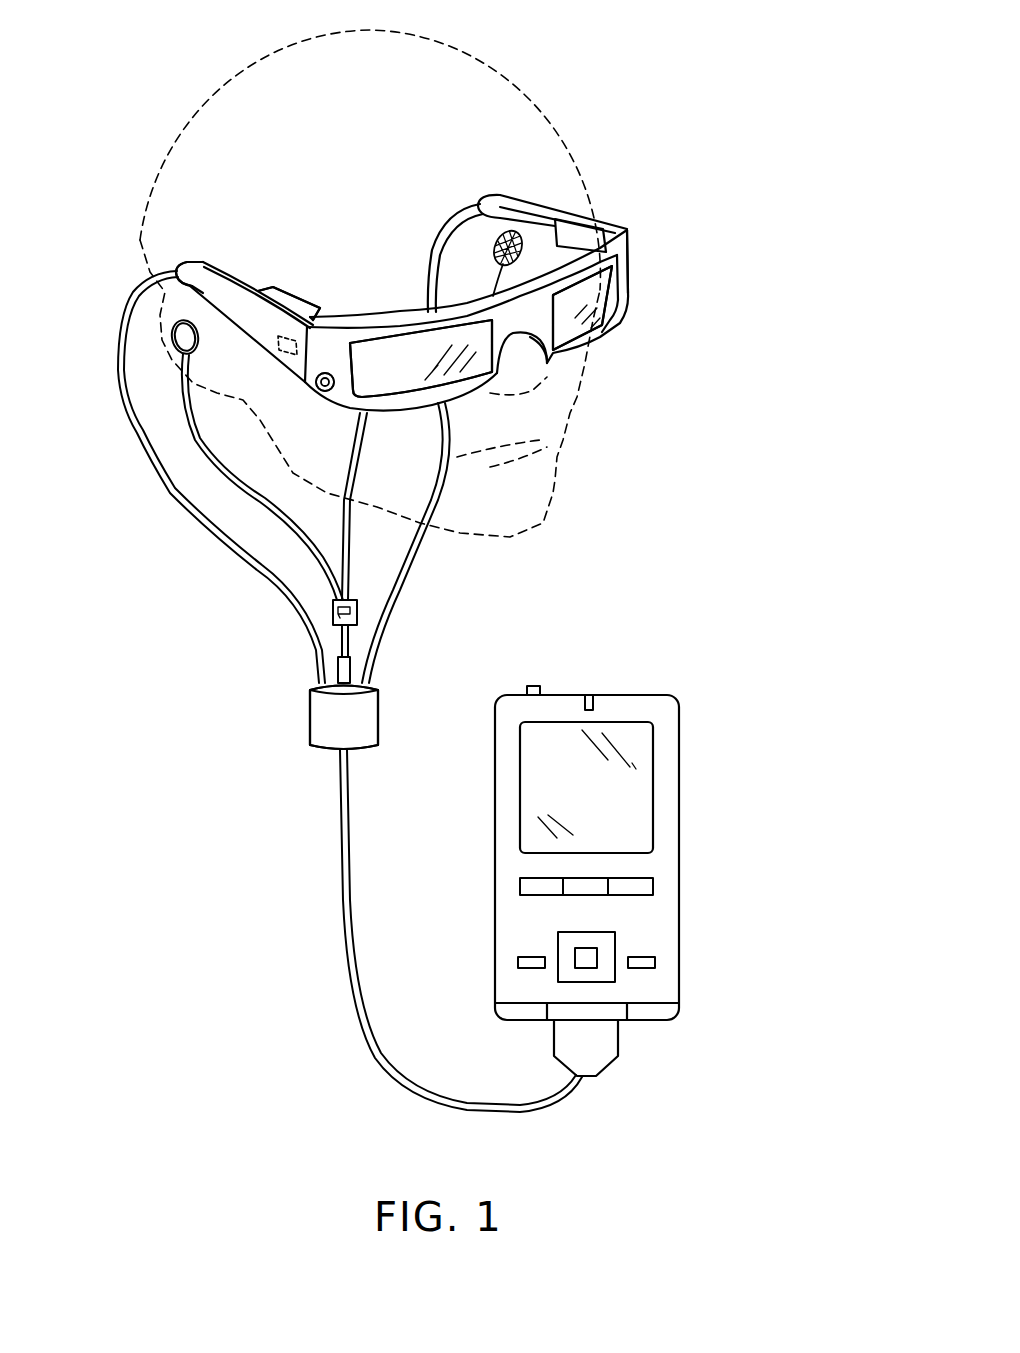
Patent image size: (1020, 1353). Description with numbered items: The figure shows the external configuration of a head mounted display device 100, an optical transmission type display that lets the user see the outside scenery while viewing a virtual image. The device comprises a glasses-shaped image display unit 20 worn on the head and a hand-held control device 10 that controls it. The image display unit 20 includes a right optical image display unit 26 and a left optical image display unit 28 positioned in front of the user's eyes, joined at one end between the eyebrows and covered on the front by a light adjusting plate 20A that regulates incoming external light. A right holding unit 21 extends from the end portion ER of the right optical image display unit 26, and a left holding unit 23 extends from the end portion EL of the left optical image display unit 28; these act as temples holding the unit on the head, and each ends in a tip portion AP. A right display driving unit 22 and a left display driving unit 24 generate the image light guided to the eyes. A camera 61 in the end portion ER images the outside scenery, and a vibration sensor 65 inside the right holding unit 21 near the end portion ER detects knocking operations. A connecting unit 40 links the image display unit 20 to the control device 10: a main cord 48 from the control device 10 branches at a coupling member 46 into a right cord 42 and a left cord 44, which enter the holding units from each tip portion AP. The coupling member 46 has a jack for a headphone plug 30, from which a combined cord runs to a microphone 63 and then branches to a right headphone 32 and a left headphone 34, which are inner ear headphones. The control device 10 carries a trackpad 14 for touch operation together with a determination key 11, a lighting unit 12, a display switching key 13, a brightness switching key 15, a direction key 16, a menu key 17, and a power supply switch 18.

The head mounted display device 100 is at (578, 110).
The control device 10 is at (653, 632).
The determination key 11 is at (592, 955).
The lighting unit 12 is at (589, 695).
The display switching key 13 is at (653, 962).
The trackpad 14 is at (540, 773).
The brightness switching key 15 is at (513, 963).
The direction key 16 is at (565, 943).
The menu key 17 is at (518, 887).
The power supply switch 18 is at (533, 686).
The image display unit 20 is at (637, 221).
The light adjusting plate 20A is at (565, 332).
The right holding unit 21 is at (199, 251).
The right display driving unit 22 is at (294, 300).
The left holding unit 23 is at (552, 197).
The left display driving unit 24 is at (575, 224).
The right optical image display unit 26 is at (403, 392).
The left optical image display unit 28 is at (608, 310).
The headphone plug 30 is at (350, 667).
The right headphone 32 is at (183, 338).
The left headphone 34 is at (490, 243).
The connecting unit 40 is at (404, 682).
The right cord 42 is at (210, 530).
The left cord 44 is at (410, 557).
The coupling member 46 is at (367, 713).
The main cord 48 is at (347, 913).
The camera 61 is at (318, 386).
The microphone 63 is at (337, 617).
The vibration sensor 65 is at (276, 350).
The tip portion AP is at (185, 262).
The end portion EL is at (633, 267).
The end portion ER is at (326, 393).